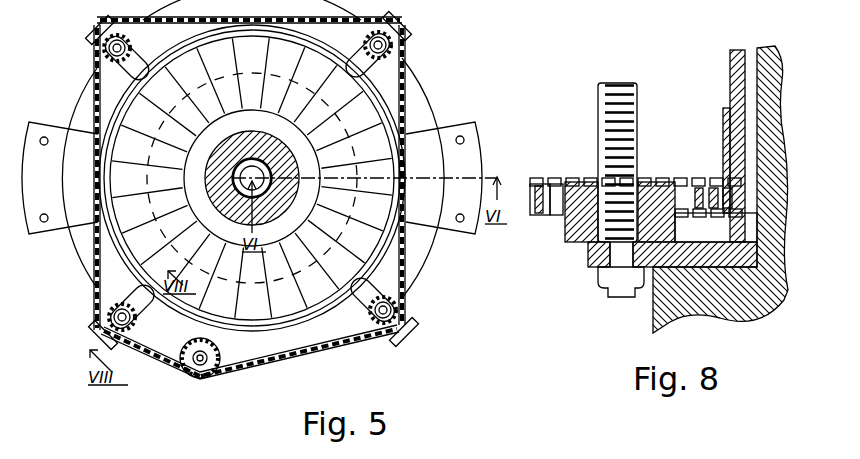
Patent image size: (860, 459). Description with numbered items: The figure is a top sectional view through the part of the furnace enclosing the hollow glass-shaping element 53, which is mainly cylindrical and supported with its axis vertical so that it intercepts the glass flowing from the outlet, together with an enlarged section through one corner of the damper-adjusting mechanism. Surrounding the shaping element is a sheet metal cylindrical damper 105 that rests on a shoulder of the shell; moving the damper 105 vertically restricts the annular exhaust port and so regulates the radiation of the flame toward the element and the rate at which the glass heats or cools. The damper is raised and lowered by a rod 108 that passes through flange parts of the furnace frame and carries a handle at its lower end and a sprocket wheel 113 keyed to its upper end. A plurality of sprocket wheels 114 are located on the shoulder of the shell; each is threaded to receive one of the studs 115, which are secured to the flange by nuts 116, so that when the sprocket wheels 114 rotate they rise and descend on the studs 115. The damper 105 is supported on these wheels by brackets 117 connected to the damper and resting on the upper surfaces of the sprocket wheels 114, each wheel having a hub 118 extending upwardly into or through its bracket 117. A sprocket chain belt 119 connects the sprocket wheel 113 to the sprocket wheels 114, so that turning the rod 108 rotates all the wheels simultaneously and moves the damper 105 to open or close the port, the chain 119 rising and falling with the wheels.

In FIG. 5, the glass-shaping element 53 is at (243, 156).
In FIG. 5, the damper 105 is at (421, 274).
In FIG. 8, the damper 105 is at (733, 90).
In FIG. 5, the rod 108 is at (193, 363).
In FIG. 5, the sprocket wheel 113 is at (200, 378).
In FIG. 5, the sprocket wheels 114 is at (100, 47).
In FIG. 8, the sprocket wheels 114 is at (583, 197).
In FIG. 8, the studs 115 is at (598, 110).
In FIG. 8, the nuts 116 is at (612, 276).
In FIG. 8, the brackets 117 is at (723, 148).
In FIG. 8, the hub 118 is at (645, 190).
In FIG. 5, the sprocket chain belt 119 is at (405, 240).
In FIG. 8, the sprocket chain belt 119 is at (540, 214).